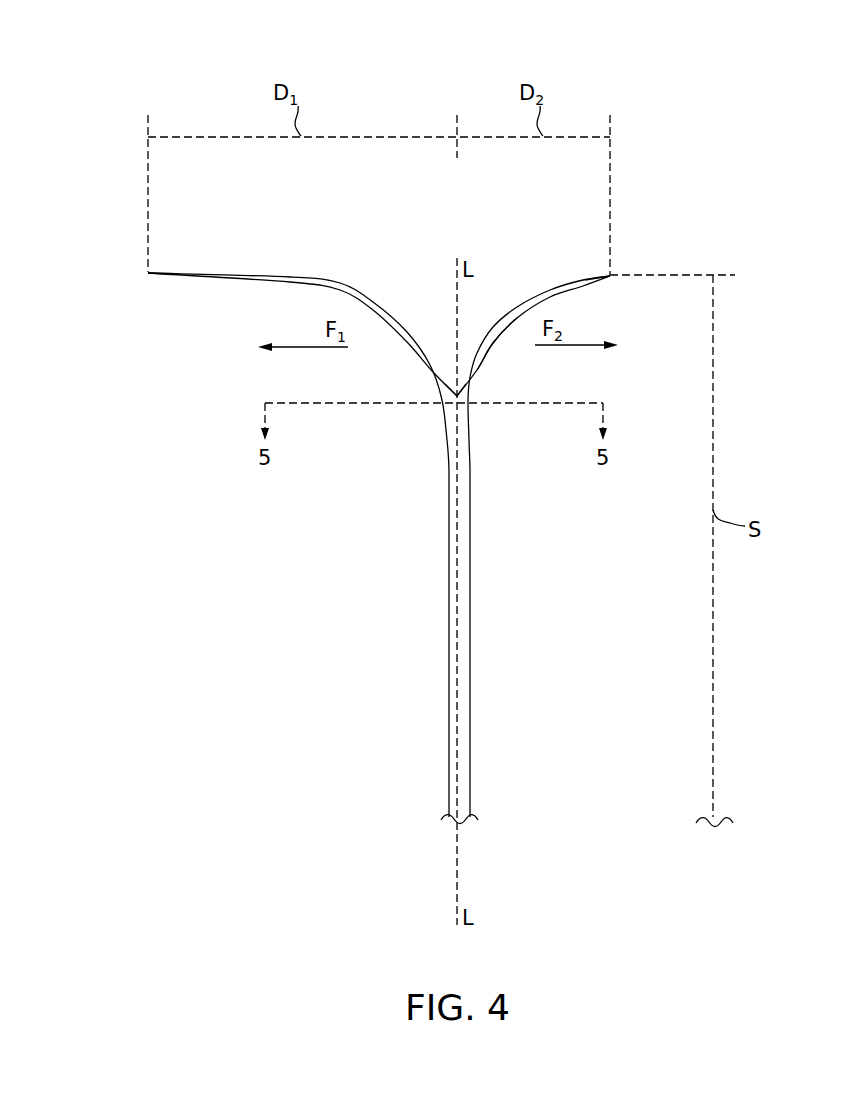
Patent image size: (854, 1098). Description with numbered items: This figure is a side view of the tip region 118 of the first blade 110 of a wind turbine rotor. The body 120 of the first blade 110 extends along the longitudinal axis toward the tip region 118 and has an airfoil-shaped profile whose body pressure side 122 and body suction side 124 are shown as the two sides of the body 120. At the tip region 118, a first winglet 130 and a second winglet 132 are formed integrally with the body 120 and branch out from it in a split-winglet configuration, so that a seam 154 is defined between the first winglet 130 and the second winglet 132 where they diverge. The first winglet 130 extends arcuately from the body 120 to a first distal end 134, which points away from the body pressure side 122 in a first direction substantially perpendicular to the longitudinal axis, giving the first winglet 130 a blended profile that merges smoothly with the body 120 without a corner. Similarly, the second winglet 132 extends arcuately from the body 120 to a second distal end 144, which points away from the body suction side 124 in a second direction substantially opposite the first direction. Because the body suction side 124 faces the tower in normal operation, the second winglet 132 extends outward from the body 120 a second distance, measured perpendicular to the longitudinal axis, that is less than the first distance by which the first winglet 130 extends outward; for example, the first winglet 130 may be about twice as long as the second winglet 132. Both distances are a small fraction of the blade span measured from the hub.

The first blade 110 is at (362, 421).
The tip region 118 is at (497, 350).
The body 120 is at (467, 647).
The body pressure side 122 is at (448, 628).
The body suction side 124 is at (471, 628).
The first winglet 130 is at (312, 274).
The second winglet 132 is at (560, 288).
The first distal end 134 is at (148, 275).
The second distal end 144 is at (610, 277).
The seam 154 is at (459, 394).